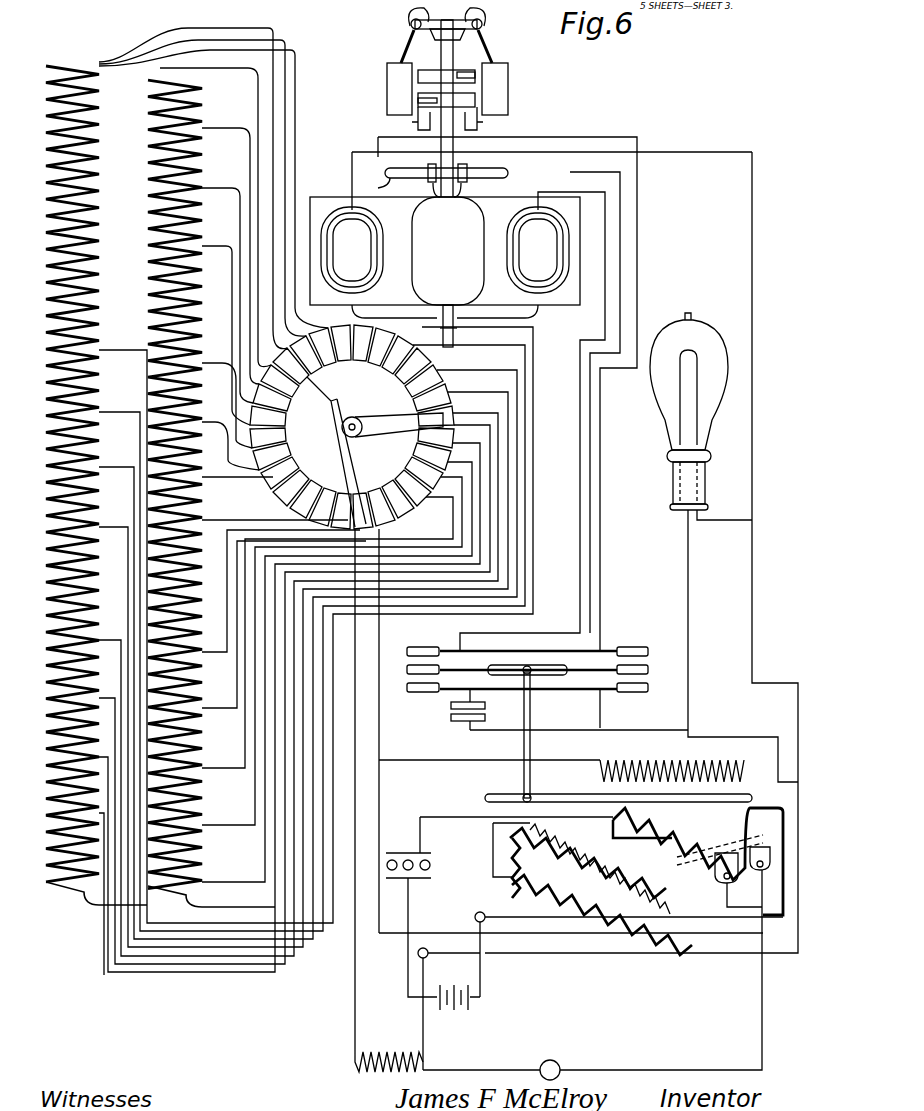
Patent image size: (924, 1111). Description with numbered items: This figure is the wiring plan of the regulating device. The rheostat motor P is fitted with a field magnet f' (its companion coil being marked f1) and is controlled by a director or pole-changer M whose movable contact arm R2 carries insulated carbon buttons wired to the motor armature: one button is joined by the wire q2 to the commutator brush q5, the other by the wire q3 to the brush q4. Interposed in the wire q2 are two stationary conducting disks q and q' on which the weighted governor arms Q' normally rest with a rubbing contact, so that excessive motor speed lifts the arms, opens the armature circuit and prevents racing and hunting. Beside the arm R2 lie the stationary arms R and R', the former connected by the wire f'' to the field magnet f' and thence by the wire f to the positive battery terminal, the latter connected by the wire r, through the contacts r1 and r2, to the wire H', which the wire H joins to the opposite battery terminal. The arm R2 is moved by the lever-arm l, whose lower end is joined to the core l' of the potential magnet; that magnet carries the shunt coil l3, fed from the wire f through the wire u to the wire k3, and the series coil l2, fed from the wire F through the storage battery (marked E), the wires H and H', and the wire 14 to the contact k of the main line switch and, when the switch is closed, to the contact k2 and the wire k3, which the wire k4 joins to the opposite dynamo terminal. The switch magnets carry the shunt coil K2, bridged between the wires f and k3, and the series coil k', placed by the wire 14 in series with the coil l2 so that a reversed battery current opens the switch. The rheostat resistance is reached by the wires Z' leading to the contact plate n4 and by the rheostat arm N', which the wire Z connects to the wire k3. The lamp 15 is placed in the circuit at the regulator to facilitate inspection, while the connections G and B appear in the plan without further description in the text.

The stationary conducting disk q is at (456, 102).
The weighted governor arms Q' is at (447, 86).
The stationary conducting disk q' is at (473, 100).
The wire q2 is at (560, 137).
The wire q3 is at (570, 172).
The commutator brush q4 is at (500, 170).
The commutator brush q5 is at (375, 183).
The rheostat motor P is at (445, 265).
The field magnet f' is at (361, 250).
The coil f1 is at (507, 240).
The wire f'' is at (594, 255).
The lamp 15 is at (712, 410).
The contact plate n4 is at (302, 380).
The rheostat arm N' is at (392, 413).
The wire Z is at (212, 499).
The wires Z' is at (285, 576).
The wire u is at (380, 778).
The director or pole-changer M is at (528, 657).
The stationary arm R is at (527, 656).
The movable contact arm R2 is at (543, 680).
The stationary arm R' is at (581, 706).
The wire r is at (620, 730).
The contact r1 is at (450, 705).
The stationary contact r2 is at (450, 722).
The lever-arm l is at (519, 735).
The core l' is at (618, 785).
The shunt coil l3 is at (740, 768).
The series coil l2 is at (698, 861).
The wire f is at (693, 891).
The shunt coil K2 is at (543, 857).
The wire 14 is at (600, 869).
The series coil k' is at (602, 915).
The contact k is at (729, 880).
The contact k2 is at (723, 852).
The wire H' is at (802, 869).
The wire H is at (629, 941).
The wire k3 is at (763, 922).
The wire k4 is at (607, 970).
The generator G is at (426, 907).
The wire F is at (449, 1009).
The battery E is at (460, 1011).
The bell B is at (552, 1056).